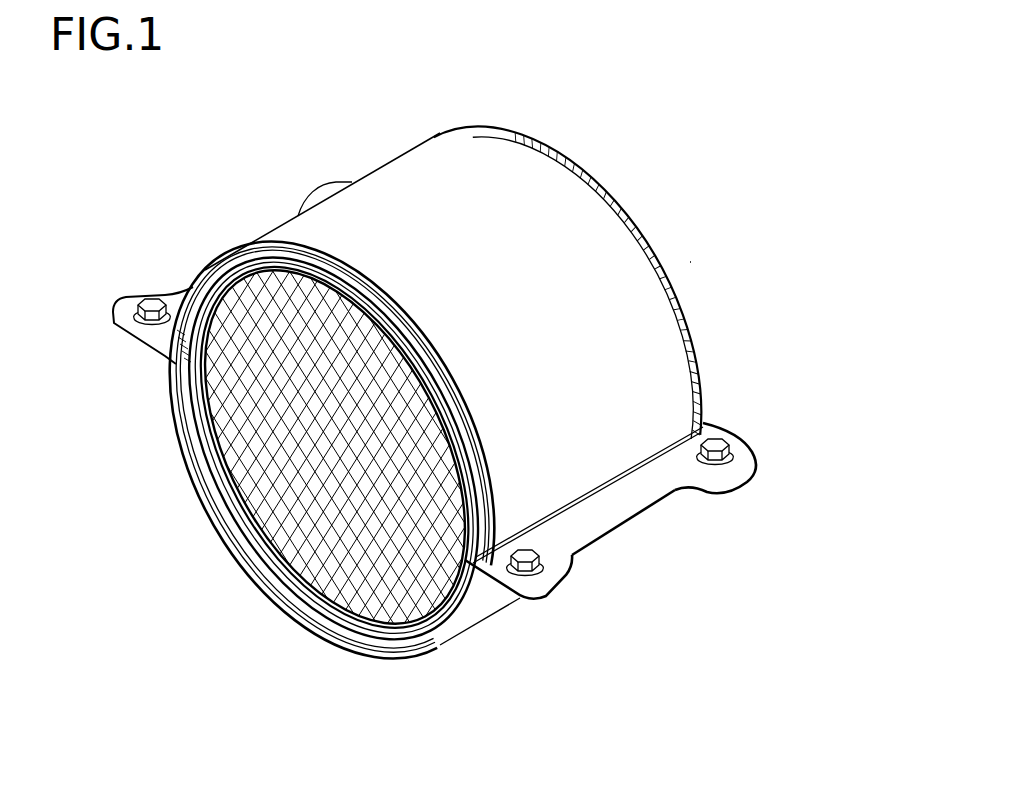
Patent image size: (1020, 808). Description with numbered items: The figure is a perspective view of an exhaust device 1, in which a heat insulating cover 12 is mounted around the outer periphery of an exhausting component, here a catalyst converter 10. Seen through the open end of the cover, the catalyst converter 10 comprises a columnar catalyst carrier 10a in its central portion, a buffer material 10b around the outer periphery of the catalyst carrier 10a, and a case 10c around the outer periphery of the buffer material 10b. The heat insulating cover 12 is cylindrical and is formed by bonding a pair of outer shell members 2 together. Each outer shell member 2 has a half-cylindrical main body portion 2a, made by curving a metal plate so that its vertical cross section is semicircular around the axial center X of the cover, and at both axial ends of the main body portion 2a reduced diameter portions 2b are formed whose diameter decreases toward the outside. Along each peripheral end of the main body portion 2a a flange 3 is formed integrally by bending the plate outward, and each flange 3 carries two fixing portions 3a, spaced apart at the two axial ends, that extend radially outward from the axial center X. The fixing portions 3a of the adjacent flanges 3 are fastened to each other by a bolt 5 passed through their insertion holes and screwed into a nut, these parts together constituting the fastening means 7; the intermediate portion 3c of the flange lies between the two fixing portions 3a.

The exhaust device 1 is at (485, 116).
The outer shell member 2 is at (552, 226).
The main body portion 2a is at (613, 347).
The reduced diameter portion 2b is at (410, 350).
The flange 3 is at (650, 510).
The fixing portion 3a is at (550, 580).
The bent edge portion 3c is at (618, 513).
The bolt 5 is at (733, 458).
The fastening means 7 is at (128, 317).
The catalyst converter 10 is at (243, 418).
The catalyst carrier 10a is at (290, 600).
The buffer material 10b is at (242, 562).
The case 10c is at (360, 627).
The heat insulating cover 12 is at (505, 192).
The axial center X is at (668, 263).